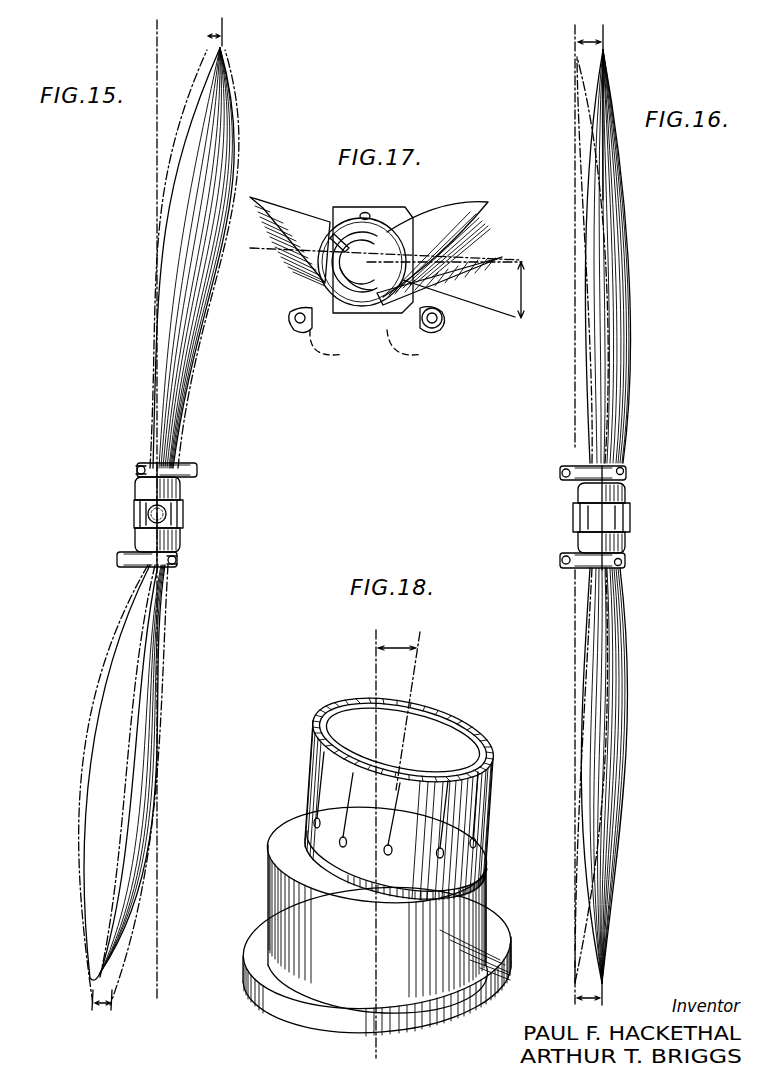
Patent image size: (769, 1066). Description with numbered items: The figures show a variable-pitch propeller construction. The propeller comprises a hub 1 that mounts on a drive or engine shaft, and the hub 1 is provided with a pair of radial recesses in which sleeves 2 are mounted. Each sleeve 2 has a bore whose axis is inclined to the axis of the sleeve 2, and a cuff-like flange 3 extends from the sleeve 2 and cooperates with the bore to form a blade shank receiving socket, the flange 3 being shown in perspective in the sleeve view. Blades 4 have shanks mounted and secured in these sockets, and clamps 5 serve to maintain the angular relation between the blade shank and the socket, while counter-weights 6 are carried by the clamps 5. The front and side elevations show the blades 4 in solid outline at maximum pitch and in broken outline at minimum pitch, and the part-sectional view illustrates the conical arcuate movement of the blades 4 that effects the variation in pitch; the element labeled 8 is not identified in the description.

In FIG. 15, the hub 1 is at (184, 515).
In FIG. 16, the hub 1 is at (631, 516).
In FIG. 17, the hub 1 is at (334, 210).
In FIG. 15, the sleeve 2 is at (136, 479).
In FIG. 16, the sleeve 2 is at (624, 482).
In FIG. 18, the sleeve 2 is at (270, 880).
In FIG. 17, the cuff-like flange 3 is at (372, 238).
In FIG. 18, the cuff-like flange 3 is at (488, 804).
In FIG. 15, the blade 4 is at (196, 392).
In FIG. 16, the blade 4 is at (627, 333).
In FIG. 17, the blade 4 is at (292, 215).
In FIG. 15, the clamp 5 is at (141, 466).
In FIG. 16, the clamp 5 is at (624, 470).
In FIG. 17, the clamp 5 is at (322, 250).
In FIG. 15, the counter-weight 6 is at (198, 471).
In FIG. 16, the counter-weight 6 is at (561, 477).
In FIG. 17, the counter-weight 6 is at (440, 331).
In FIG. 17, the blade root seat 8 is at (345, 272).